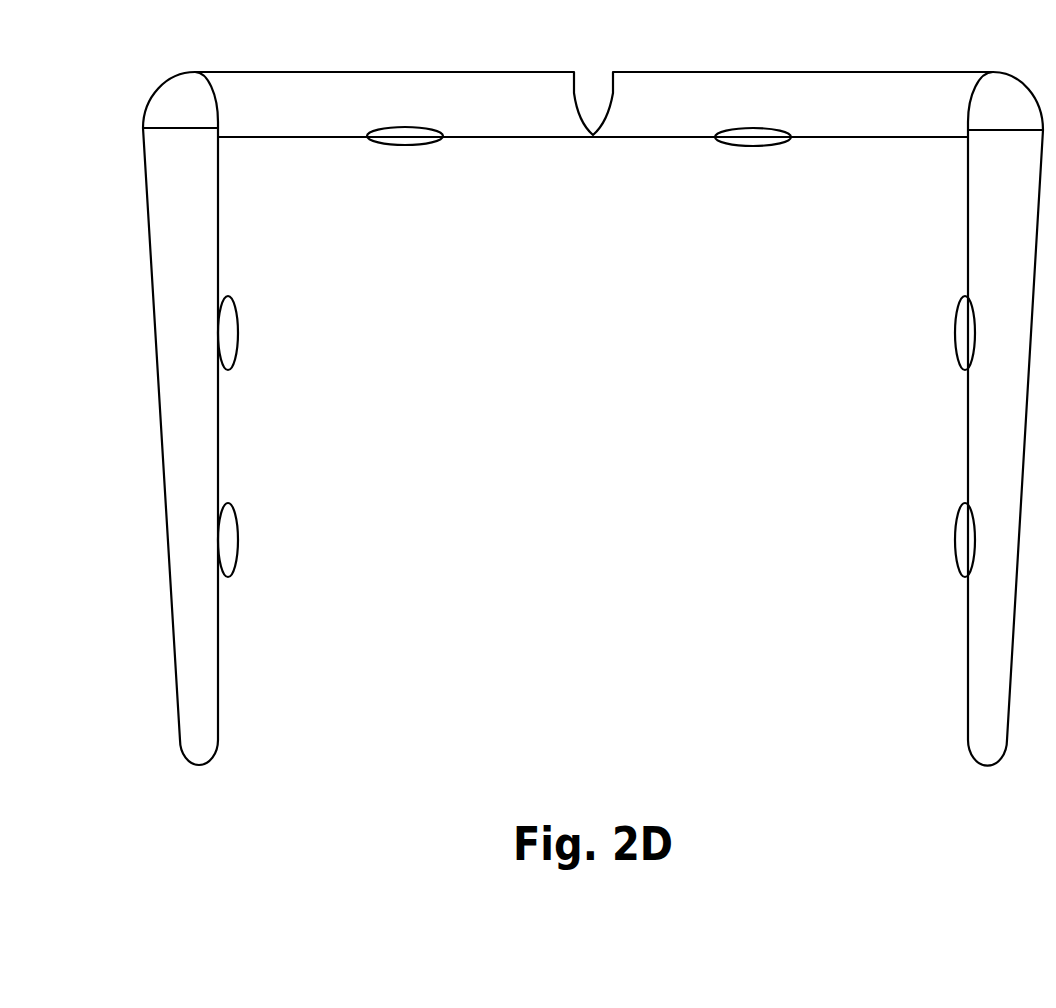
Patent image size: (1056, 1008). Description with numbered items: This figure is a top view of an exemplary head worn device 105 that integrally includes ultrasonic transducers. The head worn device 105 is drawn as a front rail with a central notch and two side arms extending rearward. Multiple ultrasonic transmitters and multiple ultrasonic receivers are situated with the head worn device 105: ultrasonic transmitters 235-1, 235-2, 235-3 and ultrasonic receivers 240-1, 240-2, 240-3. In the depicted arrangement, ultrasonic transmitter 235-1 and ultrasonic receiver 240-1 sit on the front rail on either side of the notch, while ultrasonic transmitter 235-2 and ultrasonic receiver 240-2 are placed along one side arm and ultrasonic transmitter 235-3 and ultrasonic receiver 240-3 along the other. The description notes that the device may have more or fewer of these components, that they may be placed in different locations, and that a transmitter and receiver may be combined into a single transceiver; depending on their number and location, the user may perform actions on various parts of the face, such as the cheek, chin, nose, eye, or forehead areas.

The head worn device 105 is at (275, 85).
The ultrasonic transmitter 235-1 is at (407, 137).
The ultrasonic transmitter 235-2 is at (231, 328).
The ultrasonic transmitter 235-3 is at (963, 332).
The ultrasonic receiver 240-1 is at (748, 137).
The ultrasonic receiver 240-2 is at (231, 543).
The ultrasonic receiver 240-3 is at (963, 547).